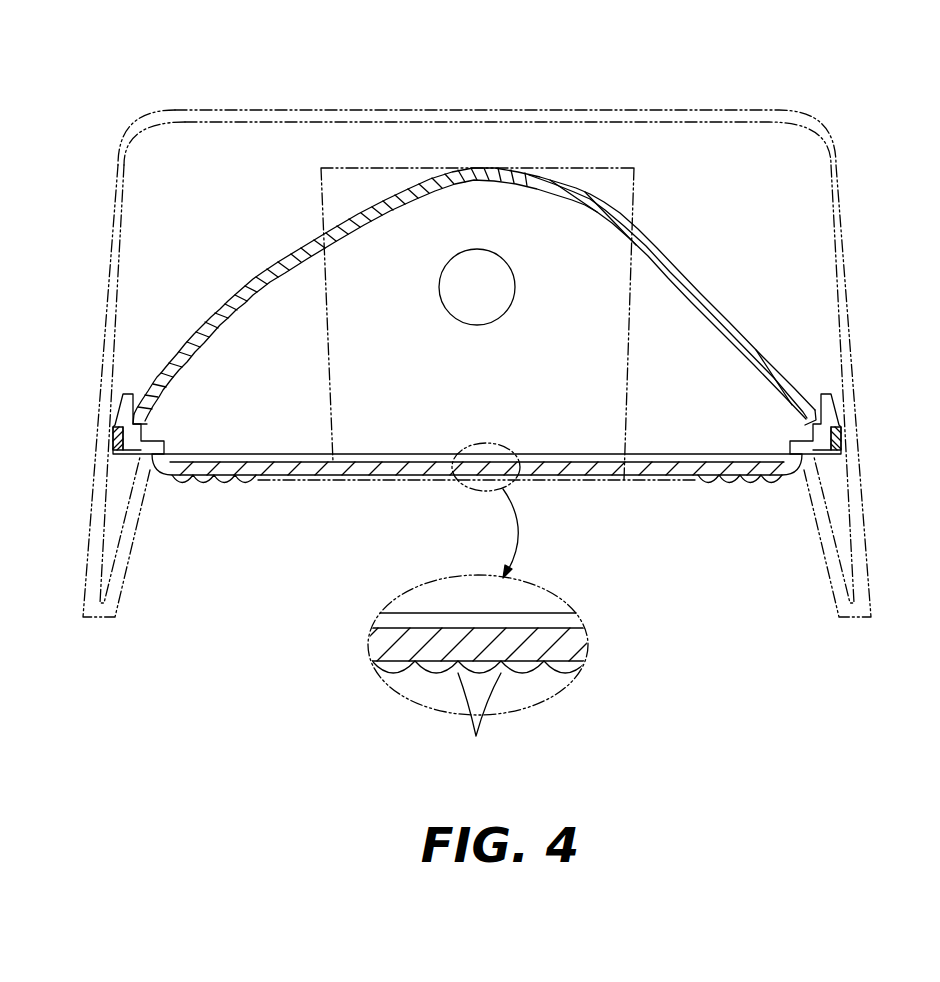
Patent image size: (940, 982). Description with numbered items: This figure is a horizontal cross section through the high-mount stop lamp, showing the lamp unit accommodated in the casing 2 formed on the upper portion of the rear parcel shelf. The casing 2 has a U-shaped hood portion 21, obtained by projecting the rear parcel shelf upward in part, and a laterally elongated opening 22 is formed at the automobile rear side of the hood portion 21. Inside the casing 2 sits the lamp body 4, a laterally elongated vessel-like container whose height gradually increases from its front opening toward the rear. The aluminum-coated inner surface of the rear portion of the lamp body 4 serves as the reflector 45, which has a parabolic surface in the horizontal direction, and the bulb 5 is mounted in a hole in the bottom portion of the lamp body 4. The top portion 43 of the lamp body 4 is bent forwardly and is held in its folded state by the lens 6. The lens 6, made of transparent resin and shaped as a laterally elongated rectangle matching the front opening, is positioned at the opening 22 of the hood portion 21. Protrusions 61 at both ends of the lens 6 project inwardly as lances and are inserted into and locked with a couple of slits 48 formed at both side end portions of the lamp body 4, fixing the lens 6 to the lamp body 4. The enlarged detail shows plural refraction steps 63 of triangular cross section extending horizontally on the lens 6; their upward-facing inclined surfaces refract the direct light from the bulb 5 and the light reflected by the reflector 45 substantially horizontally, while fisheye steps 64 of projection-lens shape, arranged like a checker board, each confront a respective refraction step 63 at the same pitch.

The casing 2 is at (658, 106).
The hood portion 21 is at (748, 110).
The opening 22 is at (818, 508).
The lamp body 4 is at (240, 292).
The reflector 45 is at (684, 286).
The bulb 5 is at (460, 268).
The top portion 43 is at (624, 410).
The lens 6 is at (300, 480).
The protrusions (lances) 61 is at (122, 402).
The slits 48 is at (113, 440).
The refraction steps 63 is at (565, 606).
The fisheye steps 64 is at (477, 717).